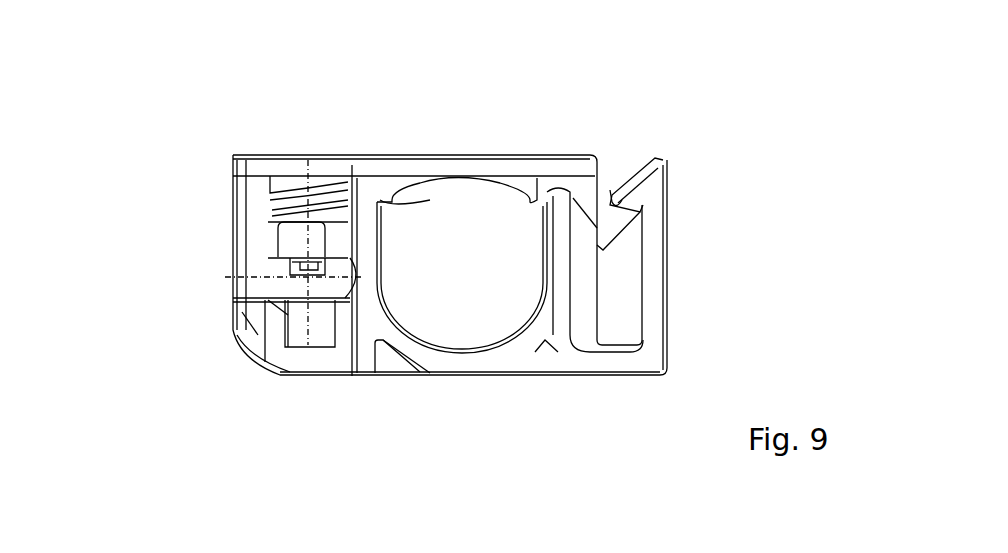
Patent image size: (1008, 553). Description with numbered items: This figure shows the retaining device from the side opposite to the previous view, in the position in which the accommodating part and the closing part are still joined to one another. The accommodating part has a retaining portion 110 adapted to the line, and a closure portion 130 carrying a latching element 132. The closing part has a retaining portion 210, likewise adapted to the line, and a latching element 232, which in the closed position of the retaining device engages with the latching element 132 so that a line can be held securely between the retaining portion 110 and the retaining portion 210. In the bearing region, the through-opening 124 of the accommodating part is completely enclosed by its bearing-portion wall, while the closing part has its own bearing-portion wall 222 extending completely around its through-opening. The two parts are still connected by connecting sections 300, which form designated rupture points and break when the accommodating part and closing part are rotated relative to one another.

The closure portion 130 is at (688, 267).
The retaining portion 110 is at (422, 350).
The retaining portion 210 is at (457, 177).
The latching element 132 is at (650, 187).
The latching element 232 is at (608, 227).
The connecting section 300 is at (332, 238).
The through-opening 124 is at (305, 250).
The bearing-portion wall 222 is at (265, 276).